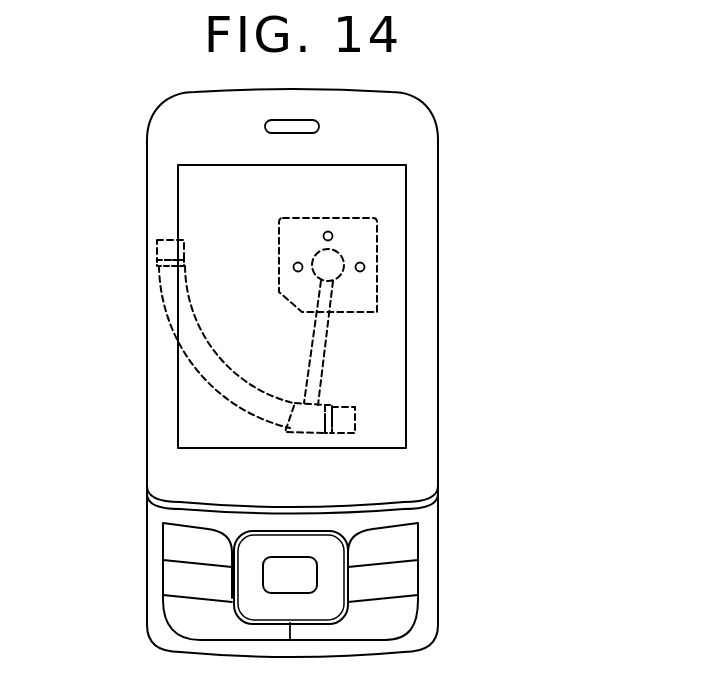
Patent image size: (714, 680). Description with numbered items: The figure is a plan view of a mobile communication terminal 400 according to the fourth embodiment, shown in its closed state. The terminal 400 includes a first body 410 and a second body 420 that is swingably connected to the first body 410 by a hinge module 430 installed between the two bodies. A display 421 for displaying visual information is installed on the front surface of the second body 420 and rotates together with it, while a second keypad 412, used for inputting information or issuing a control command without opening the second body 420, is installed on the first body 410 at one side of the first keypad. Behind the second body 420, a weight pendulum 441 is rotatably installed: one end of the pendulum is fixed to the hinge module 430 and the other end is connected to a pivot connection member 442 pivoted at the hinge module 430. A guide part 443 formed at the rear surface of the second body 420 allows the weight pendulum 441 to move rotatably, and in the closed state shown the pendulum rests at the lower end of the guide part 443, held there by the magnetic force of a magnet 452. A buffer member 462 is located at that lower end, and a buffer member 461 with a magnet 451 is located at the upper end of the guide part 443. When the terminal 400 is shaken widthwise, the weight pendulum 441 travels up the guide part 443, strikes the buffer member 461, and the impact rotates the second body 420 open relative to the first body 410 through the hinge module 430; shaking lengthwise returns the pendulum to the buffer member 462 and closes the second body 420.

The mobile communication terminal 400 is at (512, 140).
The first body 410 is at (427, 575).
The second keypad 412 is at (178, 576).
The second body 420 is at (427, 184).
The display 421 is at (204, 194).
The hinge module 430 is at (355, 258).
The weight pendulum 441 is at (310, 415).
The pivot connection member 442 is at (325, 347).
The guide part 443 is at (211, 388).
The magnet 451 is at (166, 252).
The magnet 452 is at (353, 420).
The buffer member 461 is at (158, 265).
The buffer member 462 is at (330, 431).